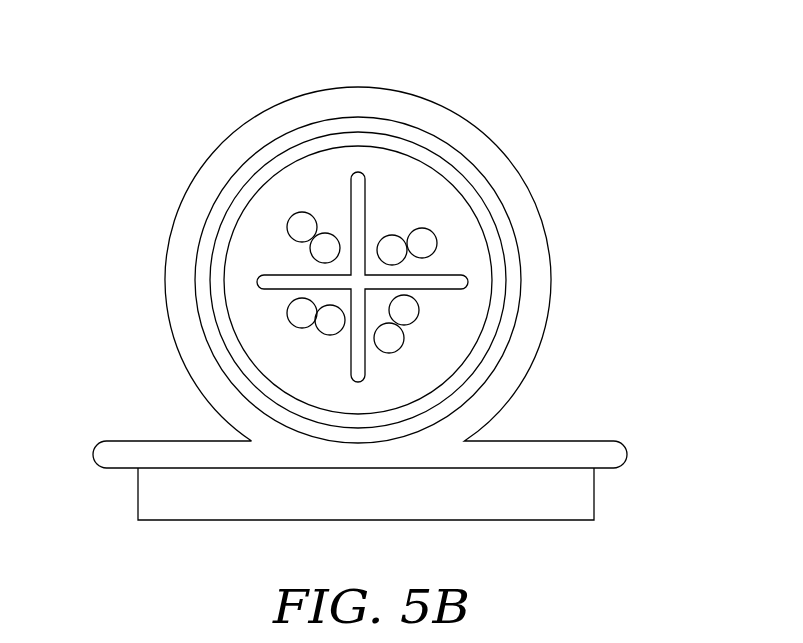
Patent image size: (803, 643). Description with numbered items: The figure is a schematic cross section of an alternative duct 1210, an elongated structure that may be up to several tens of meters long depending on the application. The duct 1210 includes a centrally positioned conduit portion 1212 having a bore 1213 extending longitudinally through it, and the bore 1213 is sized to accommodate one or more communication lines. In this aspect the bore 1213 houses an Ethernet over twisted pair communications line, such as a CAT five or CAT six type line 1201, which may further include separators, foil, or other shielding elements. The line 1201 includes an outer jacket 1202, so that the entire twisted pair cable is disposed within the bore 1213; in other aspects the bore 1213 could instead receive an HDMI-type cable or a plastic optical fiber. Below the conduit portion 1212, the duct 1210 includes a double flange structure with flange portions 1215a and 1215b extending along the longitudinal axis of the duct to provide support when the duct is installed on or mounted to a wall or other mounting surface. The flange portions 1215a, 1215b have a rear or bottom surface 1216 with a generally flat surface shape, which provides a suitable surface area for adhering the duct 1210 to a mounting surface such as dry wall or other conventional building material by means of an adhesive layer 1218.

The CAT 5 or CAT 6-type line 1201 is at (318, 125).
The outer jacket 1202 is at (277, 173).
The duct 1210 is at (162, 170).
The conduit portion 1212 is at (483, 125).
The bore 1213 is at (497, 205).
The flange portion 1215a is at (568, 441).
The flange portion 1215b is at (158, 441).
The bottom surface 1216 is at (282, 468).
The adhesive layer 1218 is at (568, 498).